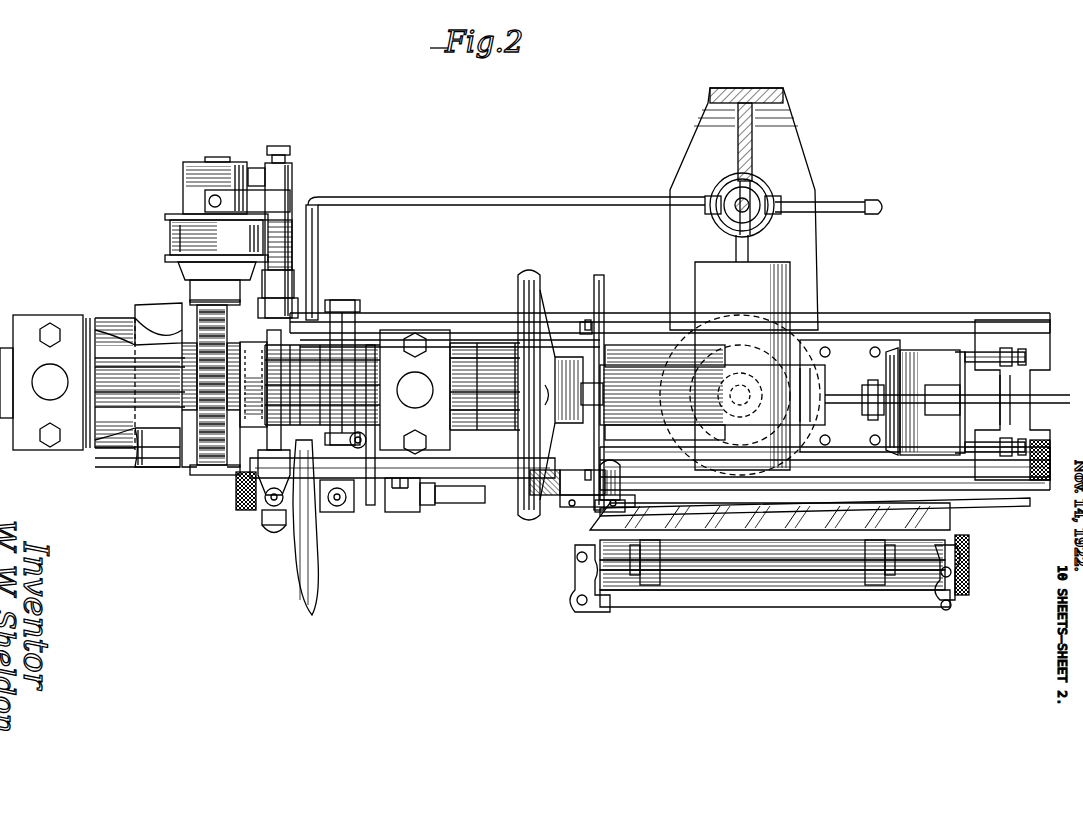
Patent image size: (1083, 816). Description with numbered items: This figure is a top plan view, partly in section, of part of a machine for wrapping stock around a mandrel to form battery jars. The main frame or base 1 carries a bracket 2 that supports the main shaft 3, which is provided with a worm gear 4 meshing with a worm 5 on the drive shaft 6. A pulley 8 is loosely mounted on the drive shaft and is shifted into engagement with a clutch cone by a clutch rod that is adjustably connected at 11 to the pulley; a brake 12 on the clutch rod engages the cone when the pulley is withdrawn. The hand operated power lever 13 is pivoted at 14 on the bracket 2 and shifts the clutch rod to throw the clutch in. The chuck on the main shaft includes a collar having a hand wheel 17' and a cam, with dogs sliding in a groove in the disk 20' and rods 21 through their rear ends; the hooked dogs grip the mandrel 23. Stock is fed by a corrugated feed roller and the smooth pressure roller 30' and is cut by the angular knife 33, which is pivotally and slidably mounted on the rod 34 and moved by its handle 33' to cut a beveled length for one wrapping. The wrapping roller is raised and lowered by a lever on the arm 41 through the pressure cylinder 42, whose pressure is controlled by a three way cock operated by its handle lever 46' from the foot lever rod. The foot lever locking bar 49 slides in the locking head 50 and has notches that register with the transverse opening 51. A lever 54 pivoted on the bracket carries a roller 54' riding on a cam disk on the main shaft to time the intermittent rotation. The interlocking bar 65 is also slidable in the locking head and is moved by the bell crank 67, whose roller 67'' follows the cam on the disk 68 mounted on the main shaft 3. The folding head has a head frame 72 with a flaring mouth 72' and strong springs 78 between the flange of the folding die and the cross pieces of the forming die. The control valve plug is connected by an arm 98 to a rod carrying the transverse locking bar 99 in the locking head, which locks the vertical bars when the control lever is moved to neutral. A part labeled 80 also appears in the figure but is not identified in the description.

The main frame 1 is at (893, 323).
The bracket 2 is at (78, 448).
The main shaft 3 is at (108, 330).
The worm gear 4 is at (195, 455).
The worm 5 is at (195, 336).
The drive shaft 6 is at (215, 158).
The pulley 8 is at (172, 241).
The adjustable connection 11 is at (295, 196).
The brake 12 is at (296, 278).
The power lever 13 is at (296, 562).
The pivot 14 is at (253, 384).
The hand wheel 17' is at (550, 378).
The disk 20' is at (602, 378).
The rods 21 is at (604, 325).
The mandrel 23 is at (808, 380).
The pressure roller 30' is at (770, 572).
The knife 33 is at (580, 523).
The handle 33' is at (550, 521).
The rod 34 is at (795, 550).
The arm 41 is at (790, 147).
The pressure cylinder 42 is at (775, 190).
The handle lever 46' is at (505, 245).
The locking bar 49 is at (320, 500).
The locking head 50 is at (410, 500).
The transverse opening 51 is at (503, 385).
The lever 54 is at (230, 507).
The roller 54' is at (240, 431).
The interlocking bar 65 is at (378, 510).
The bell crank 67 is at (415, 392).
The roller 67'' is at (360, 360).
The disk 68 is at (372, 362).
The head frame 72 is at (943, 370).
The flaring mouth 72' is at (917, 370).
The springs 78 is at (1000, 350).
The right block 80 is at (1074, 420).
The arm 98 is at (985, 498).
The locking bar 99 is at (458, 503).